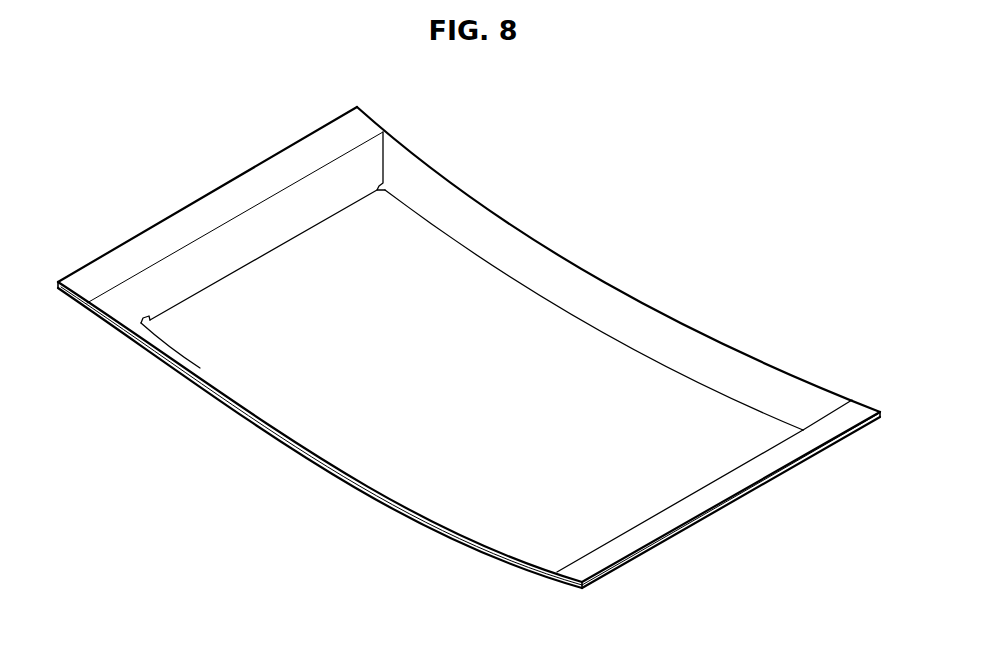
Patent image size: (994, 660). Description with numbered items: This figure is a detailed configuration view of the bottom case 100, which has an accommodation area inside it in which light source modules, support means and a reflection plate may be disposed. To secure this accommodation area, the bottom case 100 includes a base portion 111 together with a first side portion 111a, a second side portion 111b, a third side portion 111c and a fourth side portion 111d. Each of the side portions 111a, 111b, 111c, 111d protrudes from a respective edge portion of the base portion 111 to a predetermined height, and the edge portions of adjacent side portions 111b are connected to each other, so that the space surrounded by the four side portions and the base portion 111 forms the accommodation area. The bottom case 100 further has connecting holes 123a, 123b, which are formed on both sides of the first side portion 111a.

The bottom case 100 is at (697, 147).
The base portion 111 is at (615, 375).
The first side portion 111a is at (220, 207).
The second side portion 111b is at (560, 280).
The third side portion 111c is at (727, 489).
The fourth side portion 111d is at (177, 367).
The connecting hole 123a is at (393, 185).
The connecting hole 123b is at (148, 325).